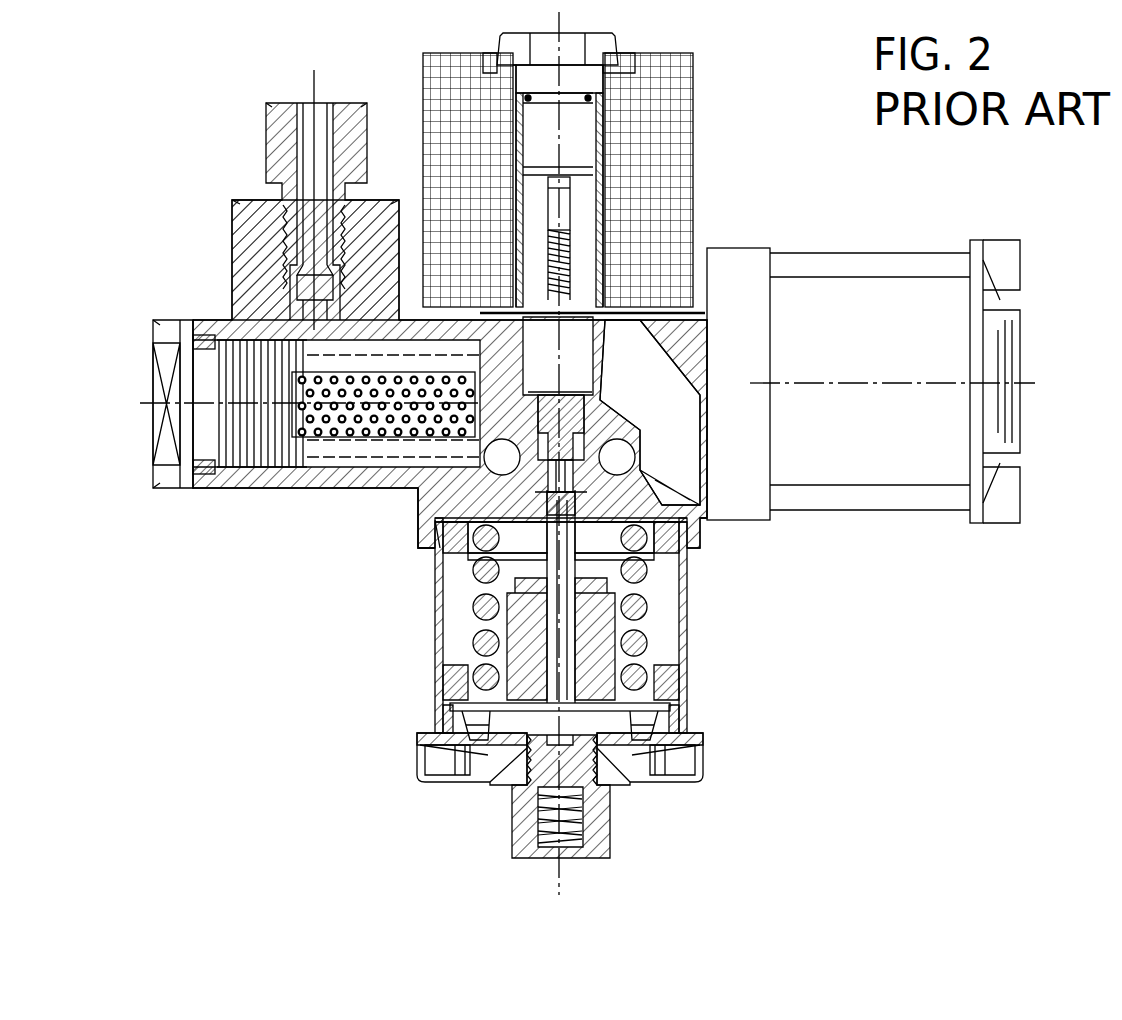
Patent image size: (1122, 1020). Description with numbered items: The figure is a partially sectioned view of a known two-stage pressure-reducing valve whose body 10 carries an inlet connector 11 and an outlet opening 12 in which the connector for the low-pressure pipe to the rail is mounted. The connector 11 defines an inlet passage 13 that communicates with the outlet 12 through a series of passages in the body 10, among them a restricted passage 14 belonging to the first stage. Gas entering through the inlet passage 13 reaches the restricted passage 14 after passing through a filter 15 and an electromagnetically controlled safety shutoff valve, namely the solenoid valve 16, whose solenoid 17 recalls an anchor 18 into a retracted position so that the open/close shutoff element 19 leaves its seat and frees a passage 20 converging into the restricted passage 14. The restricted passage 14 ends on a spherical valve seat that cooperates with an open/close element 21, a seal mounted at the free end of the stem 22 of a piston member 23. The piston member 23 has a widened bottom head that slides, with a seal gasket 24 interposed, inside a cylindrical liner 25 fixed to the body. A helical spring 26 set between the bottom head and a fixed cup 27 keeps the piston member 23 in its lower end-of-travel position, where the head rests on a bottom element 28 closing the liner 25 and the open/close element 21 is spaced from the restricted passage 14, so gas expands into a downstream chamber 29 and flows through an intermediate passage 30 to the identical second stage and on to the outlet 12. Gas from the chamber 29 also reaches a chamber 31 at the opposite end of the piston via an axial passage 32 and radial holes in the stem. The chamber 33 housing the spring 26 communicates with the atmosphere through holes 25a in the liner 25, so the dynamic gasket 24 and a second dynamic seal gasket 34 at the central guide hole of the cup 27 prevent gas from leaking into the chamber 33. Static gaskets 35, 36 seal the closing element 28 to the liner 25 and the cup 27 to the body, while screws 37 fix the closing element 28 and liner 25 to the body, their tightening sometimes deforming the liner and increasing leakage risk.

The body of the valve 10 is at (203, 318).
The inlet connector 11 is at (262, 135).
The outlet opening 12 is at (1030, 360).
The inlet passage 13 is at (312, 112).
The restricted passage 14 is at (410, 505).
The filter 15 is at (278, 400).
The solenoid valve 16 is at (712, 103).
The solenoid 17 is at (700, 220).
The anchor 18 is at (705, 173).
The open/close shutoff element 19 is at (585, 418).
The passage 20 is at (398, 490).
The open/close element 21 is at (635, 470).
The stem 22 is at (470, 575).
The piston member 23 is at (612, 715).
The seal gasket 24 is at (690, 720).
The cylindrical liner 25 is at (432, 618).
The holes 25a is at (690, 622).
The helical spring 26 is at (690, 680).
The fixed cup 27 is at (705, 530).
The bottom element 28 is at (505, 790).
The chamber 29 is at (418, 530).
The intermediate passage 30 is at (690, 468).
The chamber 31 is at (483, 740).
The axial passage 32 is at (680, 648).
The chamber 33 is at (440, 650).
The seal gasket 34 is at (688, 555).
The static gasket 35 is at (438, 715).
The static gasket 36 is at (688, 500).
The screws 37 is at (425, 782).